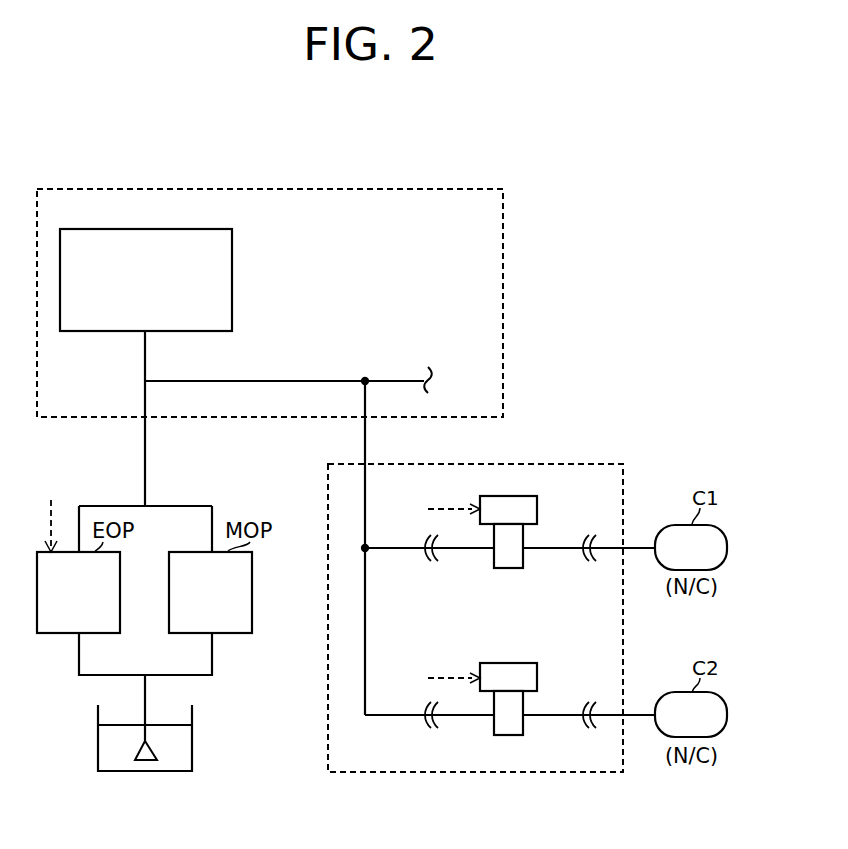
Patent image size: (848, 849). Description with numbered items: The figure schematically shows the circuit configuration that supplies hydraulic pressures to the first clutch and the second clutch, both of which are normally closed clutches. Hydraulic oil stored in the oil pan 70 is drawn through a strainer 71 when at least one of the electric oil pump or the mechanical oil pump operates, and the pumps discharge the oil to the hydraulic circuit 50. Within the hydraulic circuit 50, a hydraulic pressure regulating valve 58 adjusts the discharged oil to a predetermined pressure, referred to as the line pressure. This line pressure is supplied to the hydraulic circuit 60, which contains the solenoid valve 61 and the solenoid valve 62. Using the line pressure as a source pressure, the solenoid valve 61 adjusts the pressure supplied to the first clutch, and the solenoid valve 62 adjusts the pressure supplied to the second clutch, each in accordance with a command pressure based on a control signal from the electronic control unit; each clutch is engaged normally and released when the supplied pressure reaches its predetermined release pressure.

The hydraulic circuit 50 is at (445, 188).
The hydraulic pressure regulating valve 58 is at (233, 262).
The hydraulic circuit 60 is at (599, 448).
The solenoid valve 61 is at (538, 510).
The solenoid valve 62 is at (538, 678).
The oil pan 70 is at (193, 749).
The strainer 71 is at (145, 772).